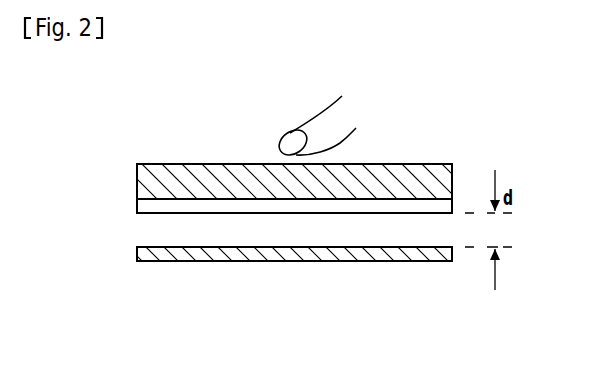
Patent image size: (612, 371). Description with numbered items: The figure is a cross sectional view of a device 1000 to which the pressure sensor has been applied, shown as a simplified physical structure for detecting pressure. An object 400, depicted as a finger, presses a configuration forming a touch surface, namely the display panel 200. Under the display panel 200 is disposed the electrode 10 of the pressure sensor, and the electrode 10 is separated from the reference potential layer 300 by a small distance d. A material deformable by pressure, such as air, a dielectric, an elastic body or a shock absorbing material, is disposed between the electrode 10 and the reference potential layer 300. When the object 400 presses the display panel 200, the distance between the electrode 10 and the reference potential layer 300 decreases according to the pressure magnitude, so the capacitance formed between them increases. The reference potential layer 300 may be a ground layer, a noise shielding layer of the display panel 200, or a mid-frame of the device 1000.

The device 1000 is at (84, 142).
The display panel 200 is at (176, 165).
The electrode 10 is at (137, 213).
The reference potential layer 300 is at (178, 262).
The object 400 is at (342, 125).